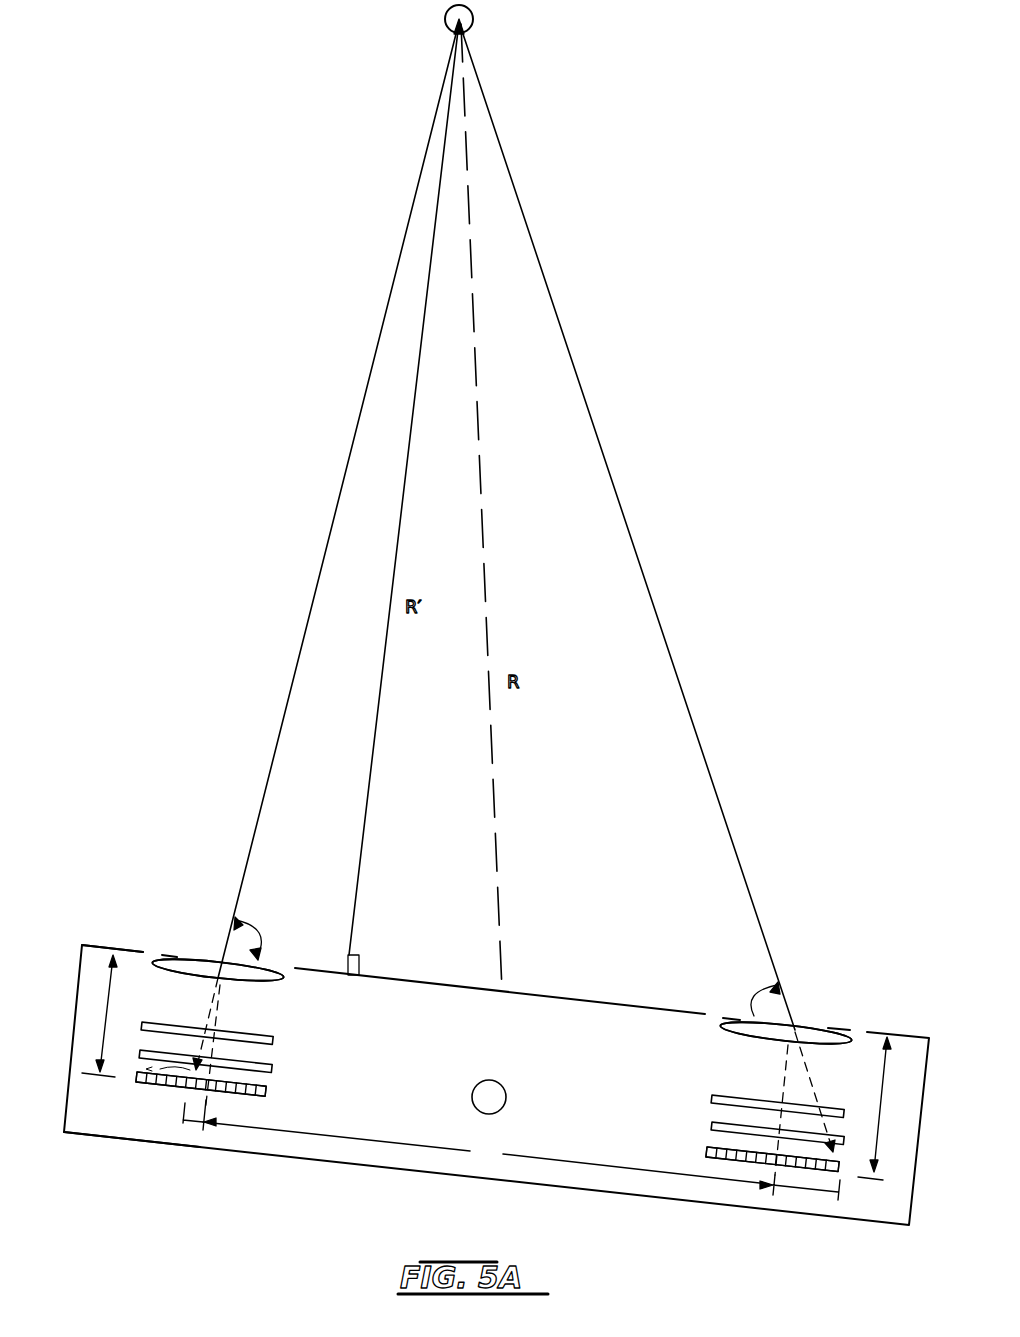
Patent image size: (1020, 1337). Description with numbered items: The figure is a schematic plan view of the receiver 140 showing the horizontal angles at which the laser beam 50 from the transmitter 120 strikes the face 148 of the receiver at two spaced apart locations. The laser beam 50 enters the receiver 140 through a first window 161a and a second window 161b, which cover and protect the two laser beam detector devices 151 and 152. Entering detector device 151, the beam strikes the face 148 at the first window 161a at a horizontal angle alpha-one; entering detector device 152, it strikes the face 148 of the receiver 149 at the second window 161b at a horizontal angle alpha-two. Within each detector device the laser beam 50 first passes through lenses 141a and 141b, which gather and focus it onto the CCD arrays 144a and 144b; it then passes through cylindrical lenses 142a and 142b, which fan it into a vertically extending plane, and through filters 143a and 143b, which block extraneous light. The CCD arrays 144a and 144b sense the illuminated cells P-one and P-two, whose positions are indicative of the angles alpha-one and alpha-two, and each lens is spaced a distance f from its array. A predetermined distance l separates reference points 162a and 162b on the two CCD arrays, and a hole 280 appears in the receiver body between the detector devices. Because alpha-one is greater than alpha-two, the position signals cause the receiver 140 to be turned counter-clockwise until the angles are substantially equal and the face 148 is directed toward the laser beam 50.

The transmitter 120 is at (487, 19).
The laser beam 50 is at (268, 776).
The receiver 140 is at (440, 1178).
The face 148 is at (120, 943).
The receiver 149 is at (122, 1140).
The hole 280 is at (503, 1086).
The laser beam detector device 151 is at (432, 1032).
The laser beam detector device 152 is at (634, 1055).
The first window 161a is at (210, 949).
The second window 161b is at (807, 1011).
The lens 141a is at (273, 978).
The lens 141b is at (750, 1038).
The cylindrical lens 142a is at (274, 1030).
The cylindrical lens 142b is at (712, 1098).
The filter 143a is at (274, 1058).
The filter 143b is at (712, 1125).
The CCD array 144a is at (269, 1084).
The CCD array 144b is at (708, 1150).
The reference point 162a is at (208, 1093).
The reference point 162b is at (773, 1169).